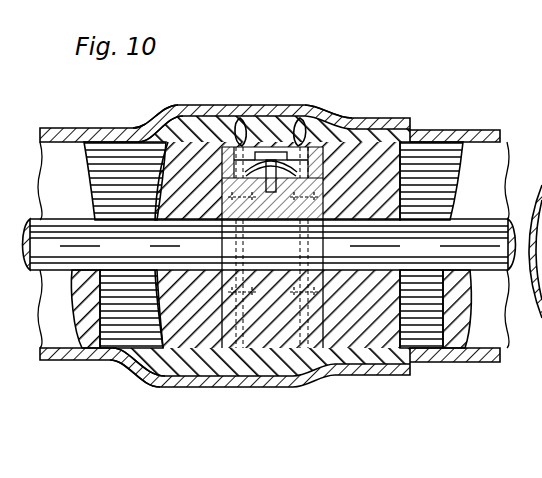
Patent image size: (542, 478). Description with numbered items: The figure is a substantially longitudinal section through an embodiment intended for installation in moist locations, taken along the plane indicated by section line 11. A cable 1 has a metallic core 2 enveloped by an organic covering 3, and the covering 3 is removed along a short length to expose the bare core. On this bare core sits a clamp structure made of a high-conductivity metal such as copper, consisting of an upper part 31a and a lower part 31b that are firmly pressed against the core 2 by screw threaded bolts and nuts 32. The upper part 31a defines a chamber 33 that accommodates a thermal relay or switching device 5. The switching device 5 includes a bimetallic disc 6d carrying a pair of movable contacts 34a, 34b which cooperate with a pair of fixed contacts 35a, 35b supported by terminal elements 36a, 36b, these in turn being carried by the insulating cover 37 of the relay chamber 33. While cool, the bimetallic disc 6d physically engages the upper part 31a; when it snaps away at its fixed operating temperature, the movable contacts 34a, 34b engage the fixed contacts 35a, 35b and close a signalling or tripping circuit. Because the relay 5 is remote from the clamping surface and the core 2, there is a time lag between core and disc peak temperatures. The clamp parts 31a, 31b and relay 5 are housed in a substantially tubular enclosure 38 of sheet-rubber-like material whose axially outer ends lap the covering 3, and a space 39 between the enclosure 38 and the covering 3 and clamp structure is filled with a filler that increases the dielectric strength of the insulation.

The cable 1 is at (488, 123).
The metallic core 2 is at (490, 230).
The organic covering 3 is at (77, 361).
The thermal relay 5 is at (325, 116).
The bimetallic disc 6d is at (232, 178).
The section line 11 is at (280, 31).
The upper part of clamp structure 31a is at (157, 213).
The lower part of clamp structure 31b is at (270, 347).
The screw threaded bolts and nuts 32 is at (326, 315).
The chamber 33 is at (383, 168).
The movable contact 34a is at (228, 160).
The movable contact 34b is at (328, 152).
The fixed contact 35a is at (233, 130).
The fixed contact 35b is at (343, 133).
The terminal element 36a is at (252, 113).
The terminal element 36b is at (300, 112).
The insulating cover 37 is at (272, 112).
The tubular enclosure 38 is at (166, 108).
The space 39 is at (148, 121).